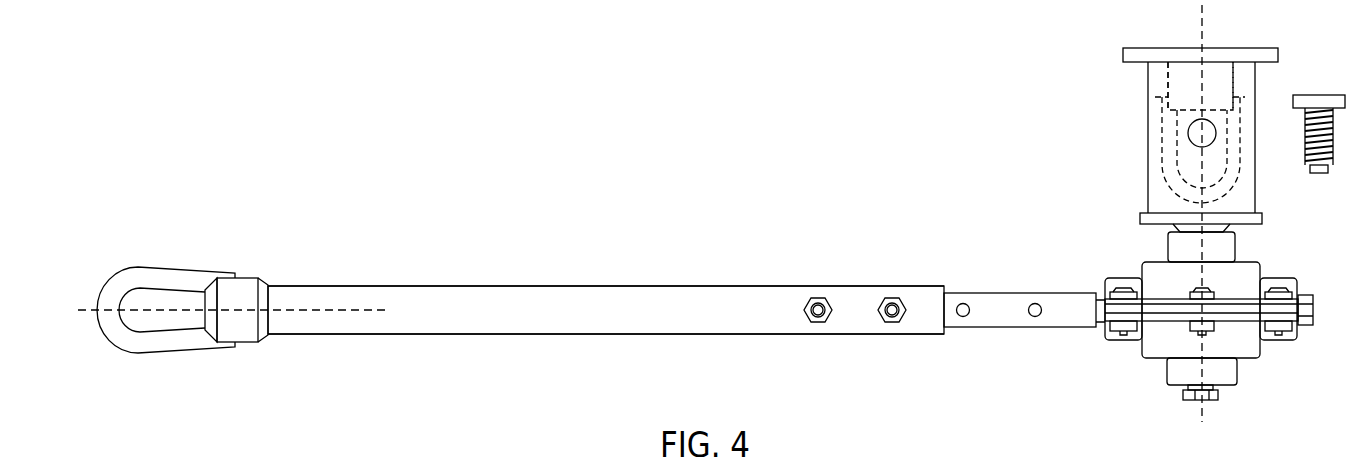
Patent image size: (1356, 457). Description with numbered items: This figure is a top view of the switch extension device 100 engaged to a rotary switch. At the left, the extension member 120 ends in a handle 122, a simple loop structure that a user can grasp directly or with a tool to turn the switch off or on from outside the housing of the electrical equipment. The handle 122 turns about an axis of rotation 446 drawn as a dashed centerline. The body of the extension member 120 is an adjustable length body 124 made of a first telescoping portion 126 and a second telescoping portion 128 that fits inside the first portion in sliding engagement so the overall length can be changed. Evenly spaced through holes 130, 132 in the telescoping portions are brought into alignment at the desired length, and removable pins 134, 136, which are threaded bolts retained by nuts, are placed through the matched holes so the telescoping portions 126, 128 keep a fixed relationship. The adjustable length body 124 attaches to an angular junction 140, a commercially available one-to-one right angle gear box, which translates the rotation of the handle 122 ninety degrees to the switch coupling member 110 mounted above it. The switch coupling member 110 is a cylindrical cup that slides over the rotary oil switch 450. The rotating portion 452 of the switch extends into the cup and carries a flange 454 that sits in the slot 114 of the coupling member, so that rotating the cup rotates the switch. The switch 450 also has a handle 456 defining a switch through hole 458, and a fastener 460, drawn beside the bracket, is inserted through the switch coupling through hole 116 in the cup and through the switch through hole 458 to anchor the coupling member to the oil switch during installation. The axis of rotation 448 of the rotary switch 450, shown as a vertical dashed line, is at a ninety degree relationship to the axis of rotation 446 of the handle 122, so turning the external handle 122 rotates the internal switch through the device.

The switch extension device 100 is at (372, 256).
The switch coupling member 110 is at (1148, 185).
The slot 114 is at (1148, 100).
The switch coupling through hole 116 is at (1193, 134).
The extension member 120 is at (305, 335).
The handle 122 is at (155, 266).
The adjustable length body 124 is at (561, 286).
The first telescoping portion 126 is at (683, 334).
The second telescoping portion 128 is at (998, 328).
The through hole 130 is at (966, 303).
The through hole 132 is at (1038, 303).
The removable pin 134 is at (820, 303).
The removable pin 136 is at (893, 303).
The angular junction 140 is at (1262, 353).
The axis of rotation 446 is at (92, 307).
The axis of rotation 448 is at (1200, 40).
The rotary oil switch 450 is at (1135, 55).
The rotating portion 452 is at (1233, 80).
The flange 454 is at (1148, 99).
The handle 456 is at (1240, 143).
The switch through hole 458 is at (1228, 168).
The fastener 460 is at (1315, 95).